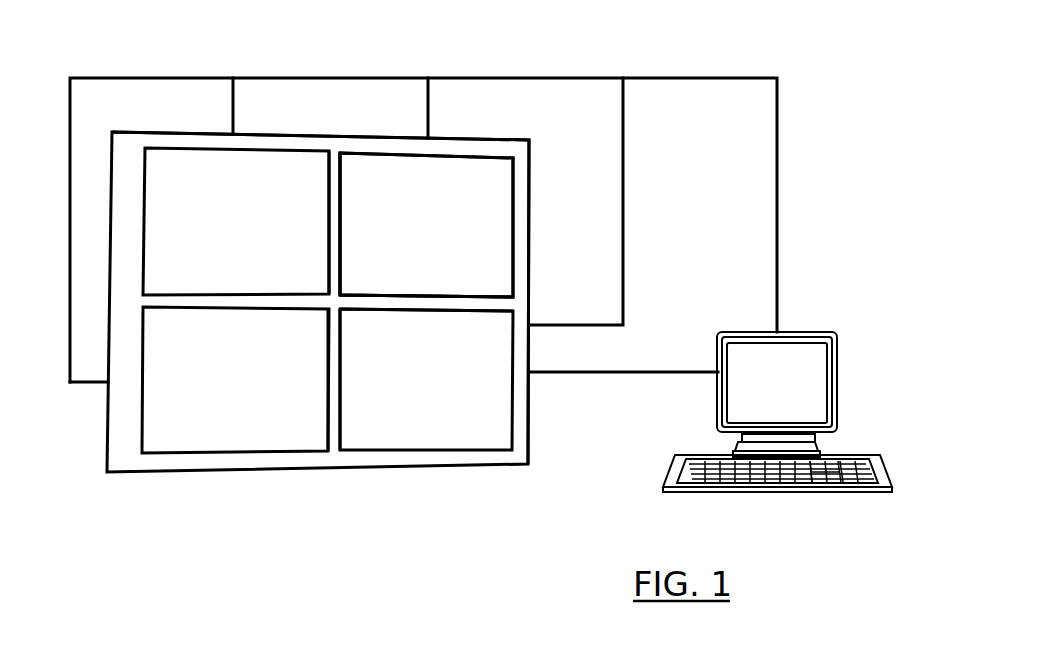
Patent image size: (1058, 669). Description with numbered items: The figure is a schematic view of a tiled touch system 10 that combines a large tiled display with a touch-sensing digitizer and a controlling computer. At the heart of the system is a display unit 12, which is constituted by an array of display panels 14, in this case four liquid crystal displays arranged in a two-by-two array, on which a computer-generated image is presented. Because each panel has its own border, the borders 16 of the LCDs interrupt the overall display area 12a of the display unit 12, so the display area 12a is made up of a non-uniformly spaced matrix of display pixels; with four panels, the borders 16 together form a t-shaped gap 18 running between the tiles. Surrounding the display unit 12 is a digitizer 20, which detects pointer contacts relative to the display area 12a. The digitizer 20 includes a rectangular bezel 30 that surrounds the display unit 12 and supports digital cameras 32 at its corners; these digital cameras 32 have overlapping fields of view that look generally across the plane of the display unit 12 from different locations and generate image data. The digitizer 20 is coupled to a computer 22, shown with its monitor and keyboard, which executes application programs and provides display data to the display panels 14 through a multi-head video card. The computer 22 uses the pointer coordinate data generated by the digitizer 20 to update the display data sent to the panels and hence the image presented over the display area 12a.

The tiled touch system 10 is at (793, 50).
The display unit 12 is at (339, 335).
The display area 12a is at (442, 218).
The display panels 14 is at (237, 197).
The borders 16 is at (522, 402).
The t-shaped gap 18 is at (360, 304).
The digitizer 20 is at (318, 335).
The computer 22 is at (815, 331).
The bezel 30 is at (128, 309).
The digital cameras 32 is at (168, 143).